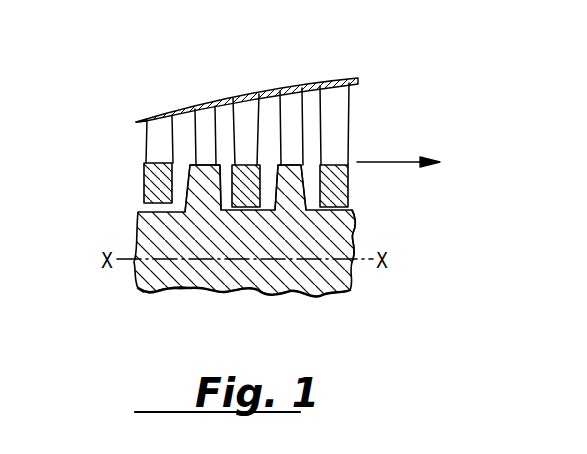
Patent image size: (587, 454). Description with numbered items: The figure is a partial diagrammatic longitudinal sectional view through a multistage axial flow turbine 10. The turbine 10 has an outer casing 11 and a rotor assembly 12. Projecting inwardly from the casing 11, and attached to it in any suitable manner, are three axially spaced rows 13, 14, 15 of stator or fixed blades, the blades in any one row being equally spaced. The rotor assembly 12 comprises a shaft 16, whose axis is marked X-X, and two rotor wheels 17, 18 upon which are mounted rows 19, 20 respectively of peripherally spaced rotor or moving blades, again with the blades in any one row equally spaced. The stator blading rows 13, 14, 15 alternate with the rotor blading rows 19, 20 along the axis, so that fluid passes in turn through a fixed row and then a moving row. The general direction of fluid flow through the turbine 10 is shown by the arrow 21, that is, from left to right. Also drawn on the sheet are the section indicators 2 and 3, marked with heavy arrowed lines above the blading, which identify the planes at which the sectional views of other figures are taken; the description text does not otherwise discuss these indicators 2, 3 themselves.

The turbine 10 is at (134, 121).
The outer casing 11 is at (353, 80).
The rotor assembly 12 is at (137, 230).
The row of stator blades 13 is at (159, 145).
The row of stator blades 14 is at (257, 147).
The row of stator blades 15 is at (335, 112).
The shaft 16 is at (348, 236).
The rotor wheel 17 is at (190, 168).
The rotor wheel 18 is at (278, 170).
The row of rotor blades 19 is at (199, 148).
The row of rotor blades 20 is at (290, 123).
The arrow 21 is at (412, 161).
The section line 2- 2 is at (159, 153).
The section line 3- 3 is at (273, 138).